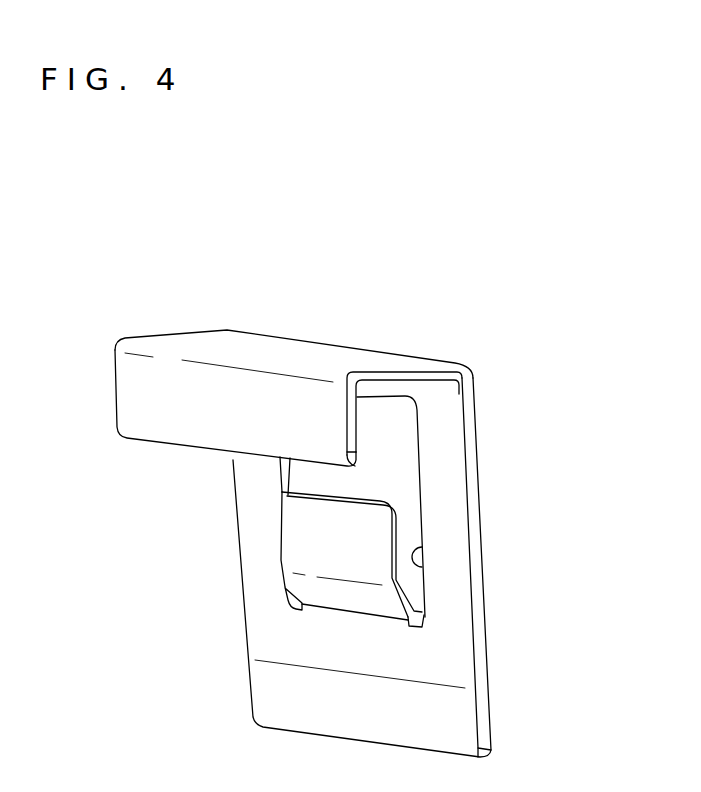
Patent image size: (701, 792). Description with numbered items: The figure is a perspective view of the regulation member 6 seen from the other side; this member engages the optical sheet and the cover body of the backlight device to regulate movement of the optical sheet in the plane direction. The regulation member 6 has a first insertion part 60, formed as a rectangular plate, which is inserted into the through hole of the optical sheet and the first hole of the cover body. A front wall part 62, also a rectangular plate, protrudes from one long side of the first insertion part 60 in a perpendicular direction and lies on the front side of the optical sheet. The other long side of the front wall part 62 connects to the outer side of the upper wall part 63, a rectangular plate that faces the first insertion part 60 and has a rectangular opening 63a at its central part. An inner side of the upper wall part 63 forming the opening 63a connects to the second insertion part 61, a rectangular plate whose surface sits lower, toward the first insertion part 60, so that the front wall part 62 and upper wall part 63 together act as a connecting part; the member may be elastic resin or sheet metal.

The regulation member 6 is at (422, 252).
The first insertion part 60 is at (167, 427).
The second insertion part 61 is at (292, 533).
The front wall part 62 is at (357, 355).
The upper wall part 63 is at (453, 492).
The opening 63a is at (421, 566).